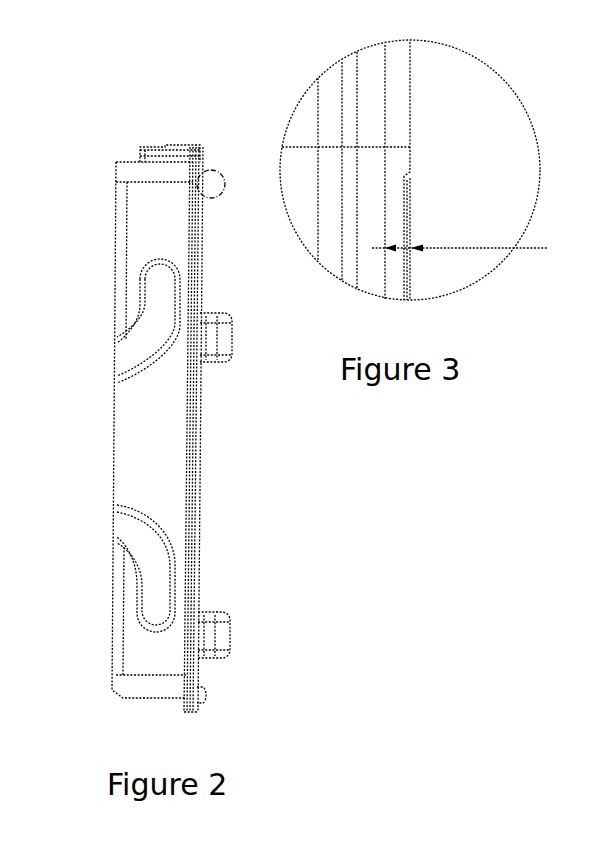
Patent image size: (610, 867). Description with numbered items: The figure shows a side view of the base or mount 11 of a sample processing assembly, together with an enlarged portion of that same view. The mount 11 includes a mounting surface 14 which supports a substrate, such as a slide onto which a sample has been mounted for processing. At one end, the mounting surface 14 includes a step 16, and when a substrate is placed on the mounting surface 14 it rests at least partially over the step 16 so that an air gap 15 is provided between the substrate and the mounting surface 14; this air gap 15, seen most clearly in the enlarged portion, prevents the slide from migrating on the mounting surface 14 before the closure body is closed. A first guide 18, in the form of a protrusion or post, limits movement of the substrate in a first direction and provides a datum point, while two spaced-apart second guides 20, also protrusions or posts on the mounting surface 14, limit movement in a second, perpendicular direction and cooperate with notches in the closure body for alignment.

In FIG. 2, the mount 11 is at (101, 157).
In FIG. 2, the mounting surface 14 is at (201, 472).
In FIG. 3, the mounting surface 14 is at (405, 288).
In FIG. 3, the air gap 15 is at (479, 251).
In FIG. 2, the step 16 is at (206, 161).
In FIG. 3, the step 16 is at (410, 127).
In FIG. 2, the first guide 18 is at (208, 702).
In FIG. 2, the second guides 20 is at (226, 330).